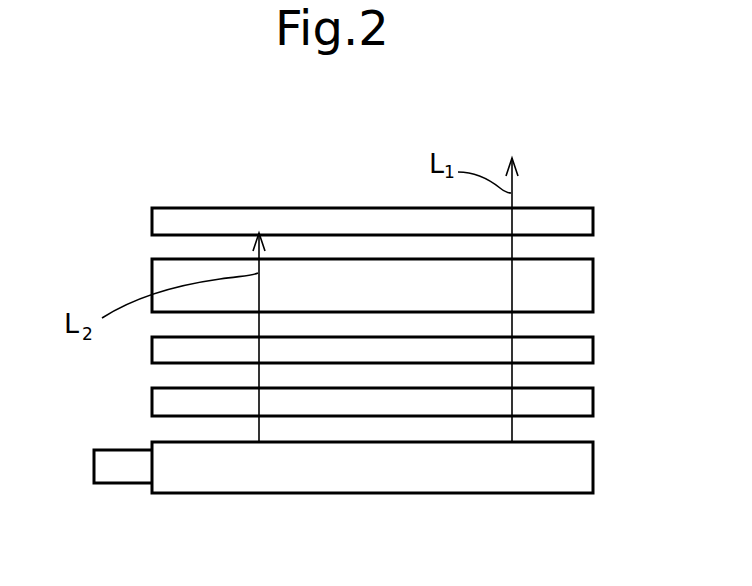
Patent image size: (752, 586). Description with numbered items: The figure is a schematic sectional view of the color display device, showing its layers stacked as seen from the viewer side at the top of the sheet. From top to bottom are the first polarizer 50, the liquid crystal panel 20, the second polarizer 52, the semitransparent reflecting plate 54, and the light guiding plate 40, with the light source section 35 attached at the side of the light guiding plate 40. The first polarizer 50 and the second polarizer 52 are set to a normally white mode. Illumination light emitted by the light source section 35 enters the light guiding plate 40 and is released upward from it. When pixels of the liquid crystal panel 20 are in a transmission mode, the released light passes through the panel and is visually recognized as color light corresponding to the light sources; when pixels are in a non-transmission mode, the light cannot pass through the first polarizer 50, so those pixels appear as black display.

The first polarizer 50 is at (596, 225).
The liquid crystal panel 20 is at (596, 292).
The second polarizer 52 is at (596, 351).
The semitransparent reflecting plate 54 is at (596, 402).
The light guiding plate 40 is at (596, 470).
The light source section 35 is at (112, 457).